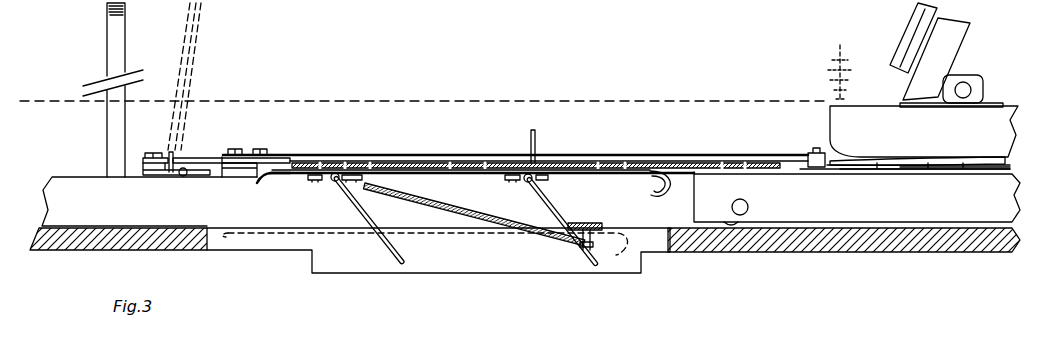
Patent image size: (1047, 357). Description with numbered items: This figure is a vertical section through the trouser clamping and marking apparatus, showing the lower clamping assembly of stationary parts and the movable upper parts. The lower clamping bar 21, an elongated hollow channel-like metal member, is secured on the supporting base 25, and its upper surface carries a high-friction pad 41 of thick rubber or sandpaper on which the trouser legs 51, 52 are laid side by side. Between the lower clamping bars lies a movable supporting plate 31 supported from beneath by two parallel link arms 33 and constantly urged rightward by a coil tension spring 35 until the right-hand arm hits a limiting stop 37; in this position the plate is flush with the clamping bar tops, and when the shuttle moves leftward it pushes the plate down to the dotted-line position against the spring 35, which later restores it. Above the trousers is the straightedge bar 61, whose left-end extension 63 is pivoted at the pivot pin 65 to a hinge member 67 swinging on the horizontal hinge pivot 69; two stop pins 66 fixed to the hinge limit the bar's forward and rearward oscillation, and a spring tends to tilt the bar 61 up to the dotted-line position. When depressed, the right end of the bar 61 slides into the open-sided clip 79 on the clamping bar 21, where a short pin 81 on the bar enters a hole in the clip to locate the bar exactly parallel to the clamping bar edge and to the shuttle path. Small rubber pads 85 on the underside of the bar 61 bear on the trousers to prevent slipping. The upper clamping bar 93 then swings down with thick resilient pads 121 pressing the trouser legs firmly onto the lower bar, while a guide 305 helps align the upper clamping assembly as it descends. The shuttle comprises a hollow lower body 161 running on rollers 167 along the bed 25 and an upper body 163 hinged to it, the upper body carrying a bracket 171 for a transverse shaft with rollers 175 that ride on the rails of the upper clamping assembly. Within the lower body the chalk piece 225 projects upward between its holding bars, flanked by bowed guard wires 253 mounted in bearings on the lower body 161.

The lower clamping bar 21 is at (70, 185).
The supporting base 25 is at (707, 247).
The movable supporting plate 31 is at (615, 173).
The link arms 33 is at (350, 199).
The coil tension spring 35 is at (473, 210).
The limiting stop 37 is at (580, 224).
The pad 41 is at (243, 173).
The trouser leg 51 is at (657, 158).
The trouser leg 52 is at (487, 160).
The bar 61 is at (193, 43).
The extension 63 is at (197, 156).
The pivot pin 65 is at (157, 152).
The stop pins 66 is at (176, 152).
The hinge member 67 is at (153, 177).
The hinge pivot 69 is at (183, 180).
The clip 79 is at (827, 160).
The pin 81 is at (817, 150).
The rubber pads 85 is at (332, 160).
The upper clamping bar 93 is at (953, 55).
The resilient pads 121 is at (915, 11).
The lower shuttle body 161 is at (868, 212).
The upper shuttle body 163 is at (888, 113).
The rollers 167 is at (735, 227).
The bracket 171 is at (978, 80).
The rollers 175 is at (972, 90).
The chalk piece 225 is at (943, 167).
The guard wires 253 is at (873, 169).
The guide 305 is at (108, 42).